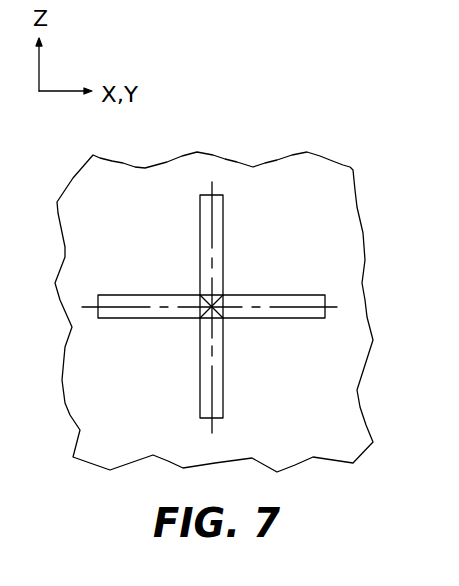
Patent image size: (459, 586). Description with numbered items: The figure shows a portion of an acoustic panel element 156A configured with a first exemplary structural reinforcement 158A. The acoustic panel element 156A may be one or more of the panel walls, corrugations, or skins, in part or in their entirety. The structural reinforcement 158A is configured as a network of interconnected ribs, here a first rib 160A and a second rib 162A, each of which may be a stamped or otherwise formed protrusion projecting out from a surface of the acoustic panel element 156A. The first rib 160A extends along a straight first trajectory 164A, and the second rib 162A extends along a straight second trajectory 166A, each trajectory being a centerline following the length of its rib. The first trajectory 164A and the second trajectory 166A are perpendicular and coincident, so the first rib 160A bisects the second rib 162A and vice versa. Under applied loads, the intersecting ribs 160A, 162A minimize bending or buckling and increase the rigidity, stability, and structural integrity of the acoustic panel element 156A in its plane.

The acoustic panel element 156A is at (335, 161).
The structural reinforcement 158A is at (215, 266).
The first rib 160A is at (285, 294).
The second rib 162A is at (224, 220).
The first trajectory 164A is at (332, 318).
The second trajectory 166A is at (211, 183).